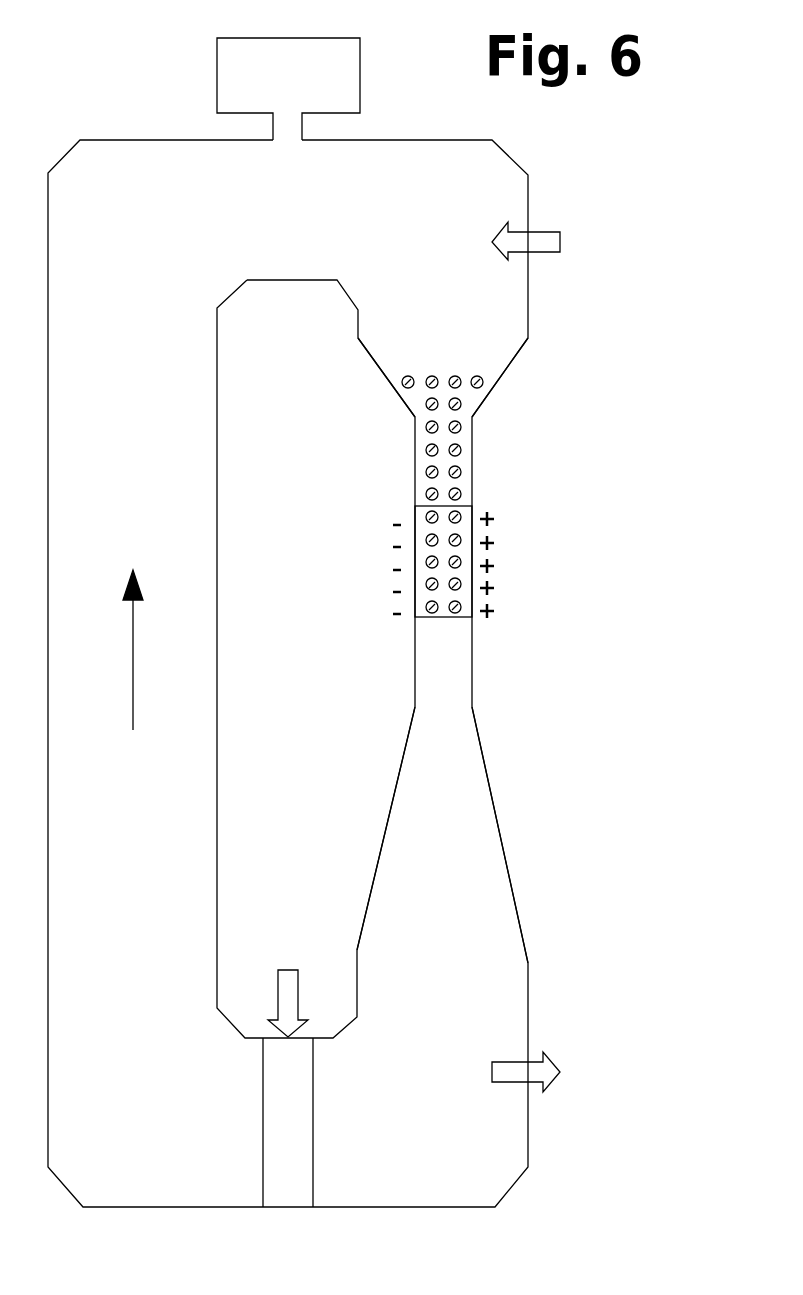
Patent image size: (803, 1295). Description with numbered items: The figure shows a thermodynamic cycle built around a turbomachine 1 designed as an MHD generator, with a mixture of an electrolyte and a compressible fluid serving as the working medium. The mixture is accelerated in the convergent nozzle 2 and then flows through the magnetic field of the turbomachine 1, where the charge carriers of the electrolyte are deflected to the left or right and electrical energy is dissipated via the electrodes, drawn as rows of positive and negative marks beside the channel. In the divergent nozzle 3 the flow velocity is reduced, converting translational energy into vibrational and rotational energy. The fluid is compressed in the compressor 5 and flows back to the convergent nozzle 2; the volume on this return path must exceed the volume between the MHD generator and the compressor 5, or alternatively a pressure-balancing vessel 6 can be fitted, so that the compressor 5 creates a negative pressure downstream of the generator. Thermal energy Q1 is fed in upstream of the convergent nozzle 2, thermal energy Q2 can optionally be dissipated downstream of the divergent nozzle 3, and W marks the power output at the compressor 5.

The turbomachine 1 is at (420, 531).
The convergent nozzle 2 is at (443, 363).
The divergent nozzle 3 is at (442, 835).
The compressor 5 is at (288, 1122).
The pressure-balancing vessel 6 is at (288, 89).
The channel width W is at (290, 970).
The thermal energy Q1 is at (568, 249).
The thermal energy Q2 is at (568, 1079).